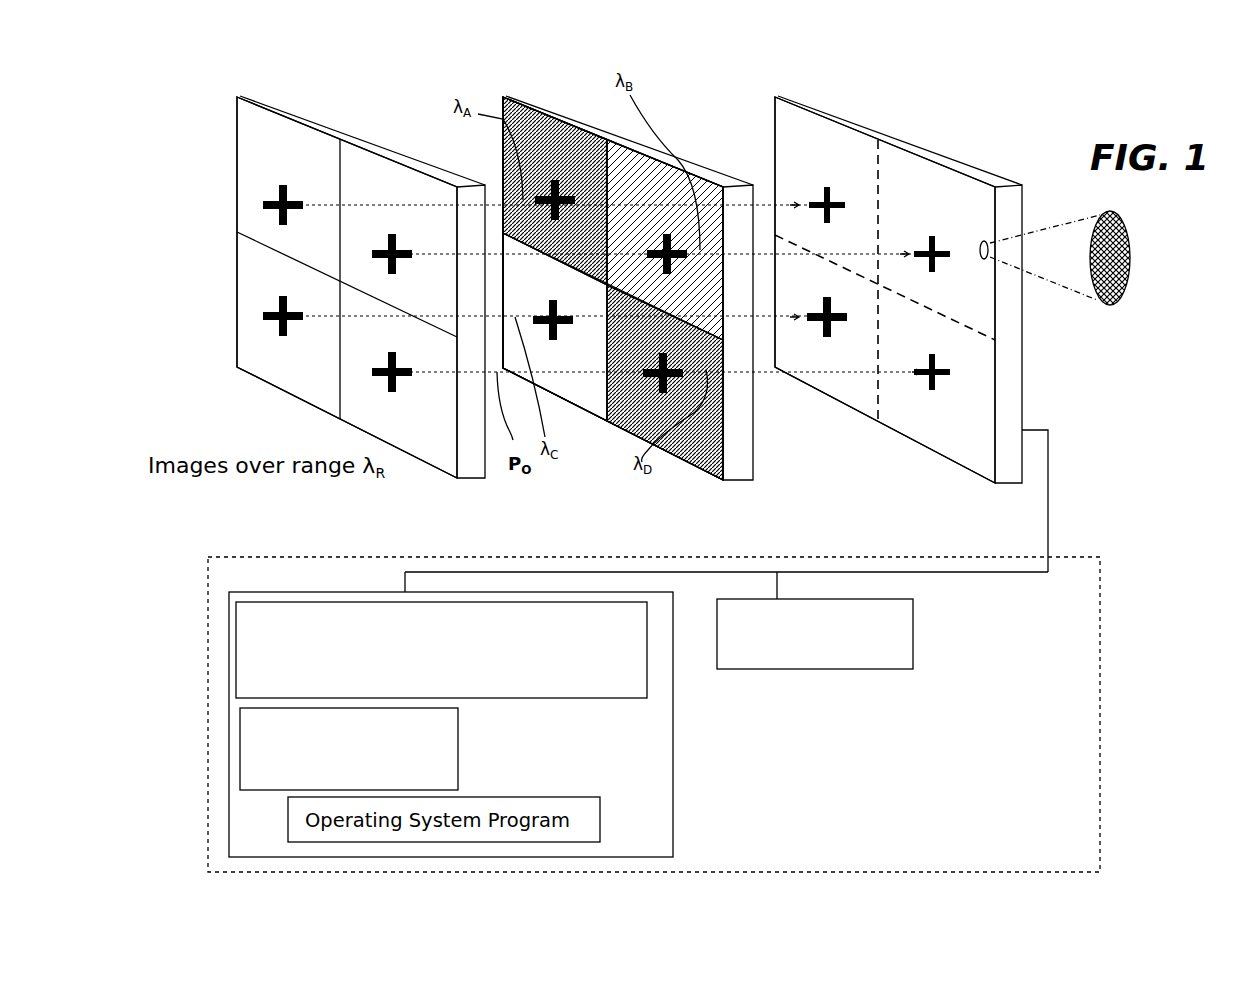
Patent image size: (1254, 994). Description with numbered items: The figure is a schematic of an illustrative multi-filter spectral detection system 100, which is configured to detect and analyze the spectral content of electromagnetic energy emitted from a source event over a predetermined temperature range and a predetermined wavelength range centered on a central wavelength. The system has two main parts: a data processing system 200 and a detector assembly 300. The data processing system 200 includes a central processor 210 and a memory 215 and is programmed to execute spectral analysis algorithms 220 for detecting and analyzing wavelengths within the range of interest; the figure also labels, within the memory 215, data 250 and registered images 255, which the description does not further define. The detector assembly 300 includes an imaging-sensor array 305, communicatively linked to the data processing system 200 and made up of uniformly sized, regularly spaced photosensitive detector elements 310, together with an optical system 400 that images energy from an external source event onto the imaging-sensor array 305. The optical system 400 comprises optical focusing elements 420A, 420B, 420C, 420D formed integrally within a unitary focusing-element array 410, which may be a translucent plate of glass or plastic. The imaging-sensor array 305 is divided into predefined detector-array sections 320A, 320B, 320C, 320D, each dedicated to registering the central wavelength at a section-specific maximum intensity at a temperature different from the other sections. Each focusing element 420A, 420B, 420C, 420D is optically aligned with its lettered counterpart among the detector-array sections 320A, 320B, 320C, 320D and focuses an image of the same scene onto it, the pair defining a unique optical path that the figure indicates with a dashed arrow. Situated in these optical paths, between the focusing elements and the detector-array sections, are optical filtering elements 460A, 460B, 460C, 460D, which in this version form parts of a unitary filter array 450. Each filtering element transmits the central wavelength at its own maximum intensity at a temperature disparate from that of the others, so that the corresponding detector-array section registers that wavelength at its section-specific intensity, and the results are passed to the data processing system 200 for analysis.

The spectral detection system 100 is at (453, 537).
The data processing system 200 is at (654, 714).
The central processor 210 is at (815, 634).
The memory 215 is at (652, 803).
The spectral analysis algorithms 220 is at (349, 749).
The data 250 is at (441, 650).
The registered images 255 is at (442, 666).
The detector assembly 300 is at (795, 70).
The imaging-sensor array 305 is at (1010, 318).
The photosensitive detector elements 310 is at (1130, 237).
The detector-array section 320A is at (797, 175).
The detector-array section 320B is at (940, 232).
The detector-array section 320C is at (840, 363).
The detector-array section 320D is at (977, 382).
The optical system 400 is at (752, 485).
The focusing-element array 410 is at (250, 98).
The optical focusing element 420A is at (255, 177).
The optical focusing element 420B is at (367, 167).
The optical focusing element 420C is at (255, 320).
The optical focusing element 420D is at (387, 408).
The filter array 450 is at (572, 117).
The optical filtering element 460A is at (592, 243).
The optical filtering element 460B is at (715, 301).
The optical filtering element 460C is at (566, 290).
The optical filtering element 460D is at (672, 341).